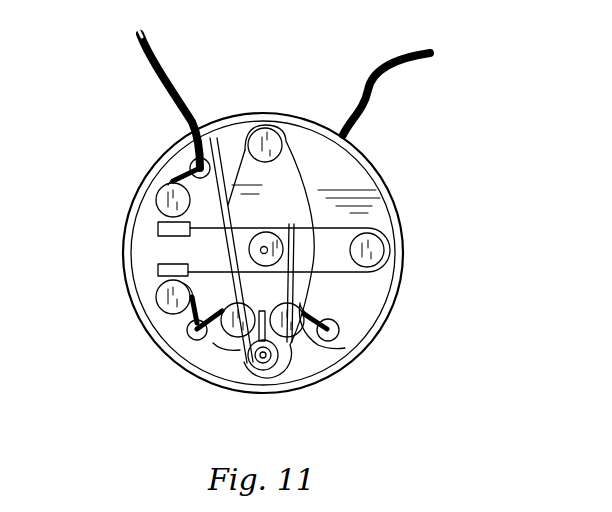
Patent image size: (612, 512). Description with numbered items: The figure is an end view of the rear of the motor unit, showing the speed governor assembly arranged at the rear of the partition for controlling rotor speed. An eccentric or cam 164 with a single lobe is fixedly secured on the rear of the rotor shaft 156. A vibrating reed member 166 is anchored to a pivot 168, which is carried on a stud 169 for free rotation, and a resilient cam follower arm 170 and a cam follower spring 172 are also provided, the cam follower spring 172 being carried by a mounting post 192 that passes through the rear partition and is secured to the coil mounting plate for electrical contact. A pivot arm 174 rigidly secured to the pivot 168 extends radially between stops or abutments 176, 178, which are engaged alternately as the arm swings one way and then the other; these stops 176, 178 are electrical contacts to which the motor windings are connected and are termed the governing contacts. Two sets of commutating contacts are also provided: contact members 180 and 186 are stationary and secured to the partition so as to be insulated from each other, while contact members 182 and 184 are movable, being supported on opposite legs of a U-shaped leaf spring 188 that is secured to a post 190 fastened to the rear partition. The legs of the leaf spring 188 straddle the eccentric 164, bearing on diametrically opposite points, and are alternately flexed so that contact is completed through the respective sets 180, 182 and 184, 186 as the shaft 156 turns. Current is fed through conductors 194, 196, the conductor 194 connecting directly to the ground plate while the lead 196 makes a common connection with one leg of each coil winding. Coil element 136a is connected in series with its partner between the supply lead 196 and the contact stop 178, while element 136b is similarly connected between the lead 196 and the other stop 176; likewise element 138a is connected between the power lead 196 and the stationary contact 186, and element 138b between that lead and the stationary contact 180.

The conductor 196 is at (170, 63).
The conductor 194 is at (383, 78).
The mounting post 192 is at (268, 126).
The vibrating reed member 166 is at (212, 135).
The cam follower spring 172 is at (310, 186).
The U-shaped leaf spring 188 is at (342, 230).
The post 190 is at (378, 250).
The eccentric or cam 164 is at (254, 240).
The rotor shaft 156 is at (265, 246).
The resilient cam follower arm 170 is at (296, 298).
The coil element 136a is at (308, 314).
The stop or abutment 178 is at (345, 348).
The pivot 168 is at (268, 370).
The stud 169 is at (262, 358).
The pivot arm 174 is at (262, 337).
The stop or abutment 176 is at (237, 332).
The coil element 138b is at (186, 319).
The coil element 136b is at (200, 308).
The commutating contact 180 is at (170, 297).
The commutating contact 182 is at (158, 270).
The commutating contact 184 is at (158, 229).
The commutating contact 186 is at (165, 197).
The coil element 138a is at (188, 168).